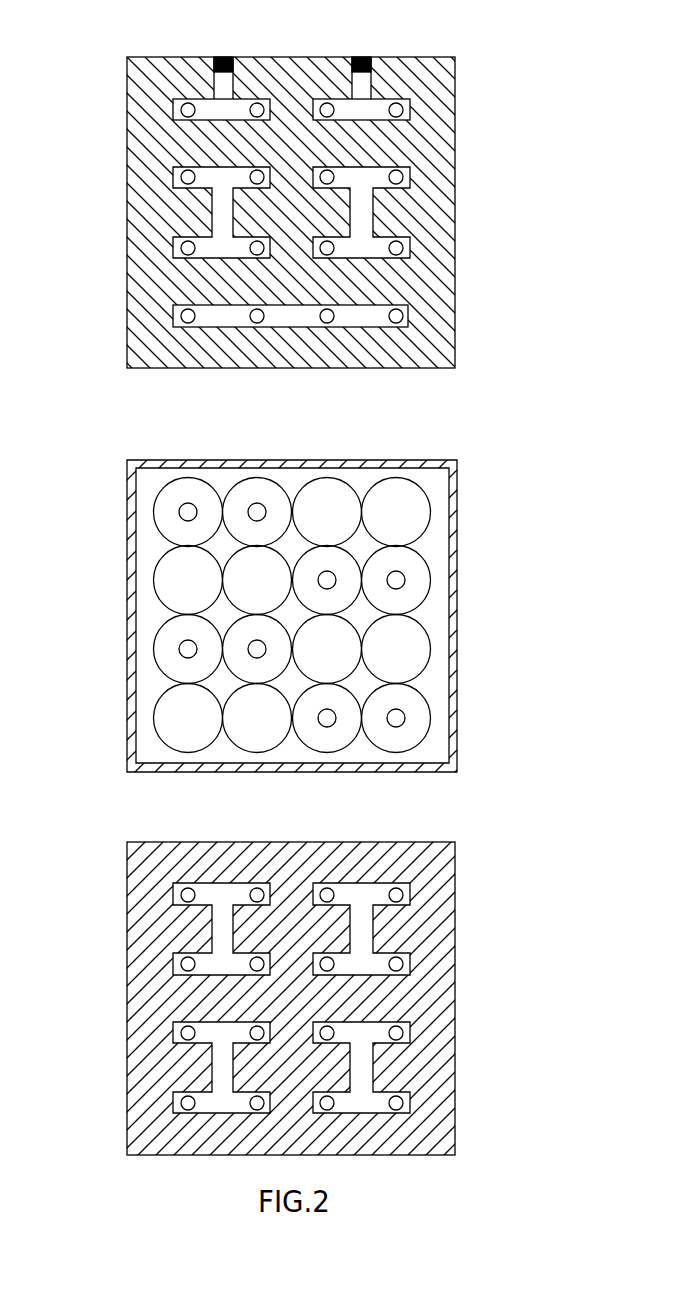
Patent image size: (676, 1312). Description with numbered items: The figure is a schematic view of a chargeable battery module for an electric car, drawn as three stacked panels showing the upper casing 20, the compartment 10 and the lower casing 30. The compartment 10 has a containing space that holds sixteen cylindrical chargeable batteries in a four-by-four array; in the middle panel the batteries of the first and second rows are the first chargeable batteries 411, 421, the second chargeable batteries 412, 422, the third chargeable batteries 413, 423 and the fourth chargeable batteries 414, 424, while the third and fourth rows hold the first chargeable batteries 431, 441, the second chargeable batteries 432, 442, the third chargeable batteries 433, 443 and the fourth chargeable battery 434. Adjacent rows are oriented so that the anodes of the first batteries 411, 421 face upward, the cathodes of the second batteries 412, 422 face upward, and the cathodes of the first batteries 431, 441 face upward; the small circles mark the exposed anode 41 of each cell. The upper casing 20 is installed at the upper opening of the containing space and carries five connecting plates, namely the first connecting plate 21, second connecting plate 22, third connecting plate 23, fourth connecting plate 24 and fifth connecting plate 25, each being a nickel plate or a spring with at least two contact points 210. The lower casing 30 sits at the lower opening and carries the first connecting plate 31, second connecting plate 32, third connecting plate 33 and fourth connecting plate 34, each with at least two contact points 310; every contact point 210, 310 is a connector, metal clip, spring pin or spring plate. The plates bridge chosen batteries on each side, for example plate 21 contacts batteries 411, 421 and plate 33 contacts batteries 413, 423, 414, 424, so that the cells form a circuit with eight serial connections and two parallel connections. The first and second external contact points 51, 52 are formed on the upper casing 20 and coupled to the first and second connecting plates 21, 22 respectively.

The compartment 10 is at (455, 525).
The upper casing 20 is at (432, 217).
The first connecting plate 21 is at (217, 88).
The second connecting plate 22 is at (367, 80).
The third connecting plate 23 is at (227, 210).
The fourth connecting plate 24 is at (413, 242).
The fifth connecting plate 25 is at (183, 310).
The contact points 210 is at (257, 110).
The lower casing 30 is at (438, 993).
The first connecting plate 31 is at (222, 925).
The second connecting plate 32 is at (363, 928).
The third connecting plate 33 is at (222, 1067).
The fourth connecting plate 34 is at (362, 1068).
The contact points 310 is at (187, 892).
The anode 41 is at (257, 507).
The first chargeable battery 411 is at (165, 507).
The second chargeable battery 412 is at (177, 582).
The third chargeable battery 413 is at (163, 647).
The fourth chargeable battery 414 is at (165, 715).
The first chargeable battery 421 is at (257, 493).
The second chargeable battery 422 is at (265, 563).
The third chargeable battery 423 is at (242, 668).
The fourth chargeable battery 424 is at (260, 740).
The first chargeable battery 431 is at (333, 513).
The second chargeable battery 432 is at (345, 582).
The third chargeable battery 433 is at (323, 668).
The fourth chargeable battery 434 is at (333, 737).
The first chargeable battery 441 is at (403, 498).
The second chargeable battery 442 is at (417, 590).
The third chargeable battery 443 is at (407, 663).
The first external contact point 51 is at (222, 57).
The second external contact point 52 is at (362, 57).